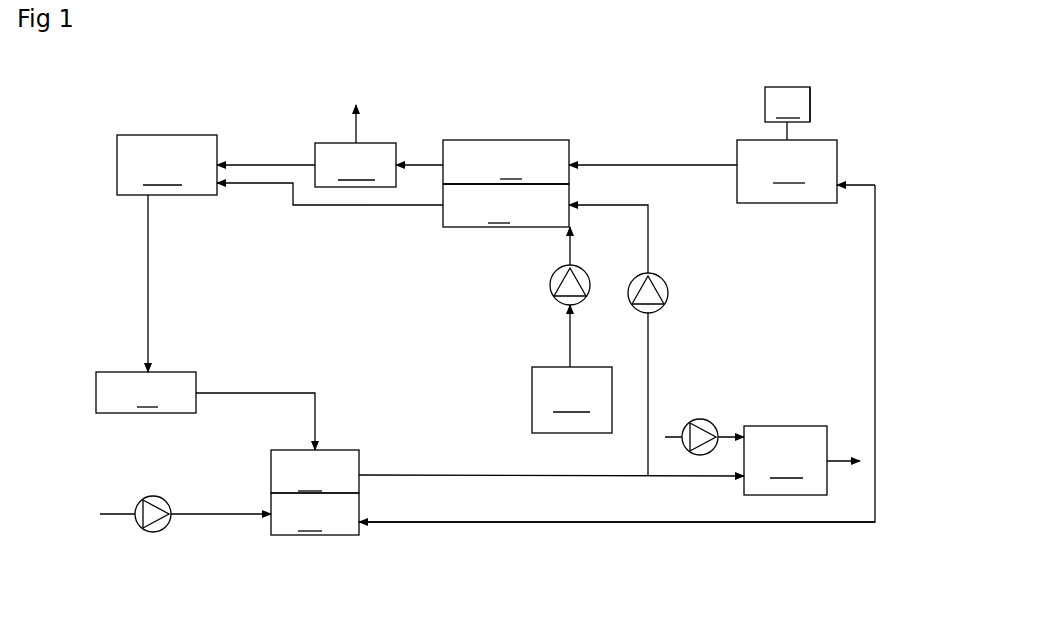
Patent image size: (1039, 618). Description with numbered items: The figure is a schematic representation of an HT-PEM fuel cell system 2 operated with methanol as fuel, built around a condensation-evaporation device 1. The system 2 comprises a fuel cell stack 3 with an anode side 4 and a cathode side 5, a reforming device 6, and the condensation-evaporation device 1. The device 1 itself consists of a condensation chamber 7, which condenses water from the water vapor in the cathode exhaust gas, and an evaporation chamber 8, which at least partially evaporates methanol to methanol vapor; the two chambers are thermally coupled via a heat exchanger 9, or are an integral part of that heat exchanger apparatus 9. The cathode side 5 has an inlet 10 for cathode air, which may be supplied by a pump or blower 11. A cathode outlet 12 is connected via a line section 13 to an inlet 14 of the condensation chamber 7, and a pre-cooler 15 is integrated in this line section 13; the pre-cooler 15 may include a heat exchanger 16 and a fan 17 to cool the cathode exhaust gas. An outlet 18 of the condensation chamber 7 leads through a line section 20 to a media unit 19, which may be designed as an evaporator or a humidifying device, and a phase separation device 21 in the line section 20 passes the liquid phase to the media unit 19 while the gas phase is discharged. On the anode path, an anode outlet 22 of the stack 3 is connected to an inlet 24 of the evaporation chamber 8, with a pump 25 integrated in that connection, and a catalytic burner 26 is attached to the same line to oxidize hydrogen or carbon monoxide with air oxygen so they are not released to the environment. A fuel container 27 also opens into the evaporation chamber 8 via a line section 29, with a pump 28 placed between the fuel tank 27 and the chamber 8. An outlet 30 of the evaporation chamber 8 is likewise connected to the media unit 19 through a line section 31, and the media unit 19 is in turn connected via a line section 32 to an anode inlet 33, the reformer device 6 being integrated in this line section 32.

The condensation-evaporation device 1 is at (530, 140).
The HT-PEM fuel cell system 2 is at (698, 68).
The fuel cell stack 3 is at (325, 538).
The anode side 4 is at (315, 472).
The cathode side 5 is at (315, 514).
The reforming device 6 is at (146, 392).
The condensation chamber 7 is at (506, 162).
The evaporation chamber 8 is at (506, 205).
The heat exchanger 9 is at (466, 178).
The inlet 10 is at (268, 516).
The blower 11 is at (145, 525).
The cathode outlet 12 is at (362, 522).
The line section 13 is at (652, 522).
The inlet 14 is at (574, 157).
The pre-cooler 15 is at (836, 127).
The heat exchanger 16 is at (787, 171).
The fan 17 is at (787, 113).
The outlet 18 is at (441, 152).
The media unit 19 is at (167, 165).
The line section 20 is at (247, 163).
The phase separation device 21 is at (355, 146).
The anode outlet 22 is at (362, 470).
The inlet 24 is at (576, 205).
The pump 25 is at (672, 284).
The catalytic burner 26 is at (762, 457).
The fuel container 27 is at (572, 400).
The pump 28 is at (552, 282).
The line section 29 is at (568, 332).
The outlet 30 is at (442, 207).
The line section 31 is at (315, 207).
The line section 32 is at (148, 290).
The anode inlet 33 is at (320, 446).